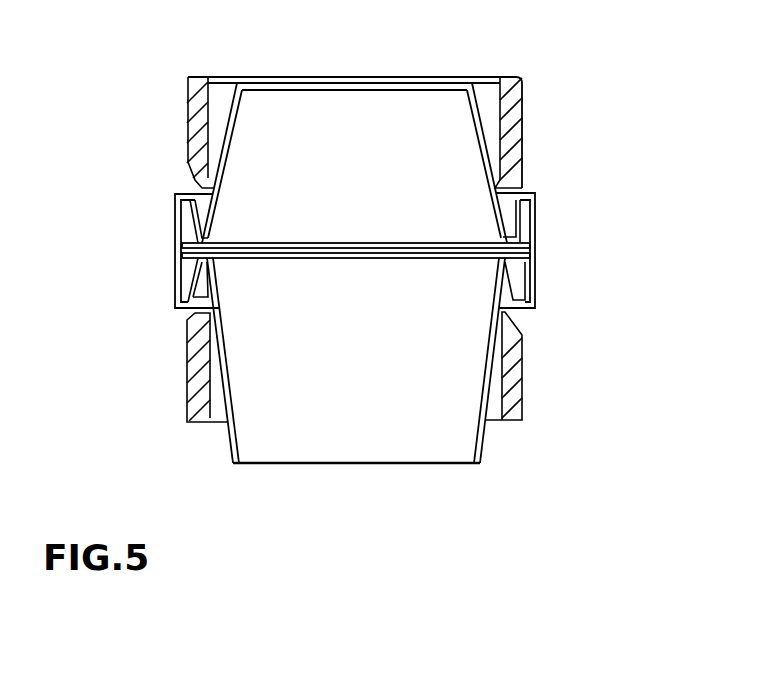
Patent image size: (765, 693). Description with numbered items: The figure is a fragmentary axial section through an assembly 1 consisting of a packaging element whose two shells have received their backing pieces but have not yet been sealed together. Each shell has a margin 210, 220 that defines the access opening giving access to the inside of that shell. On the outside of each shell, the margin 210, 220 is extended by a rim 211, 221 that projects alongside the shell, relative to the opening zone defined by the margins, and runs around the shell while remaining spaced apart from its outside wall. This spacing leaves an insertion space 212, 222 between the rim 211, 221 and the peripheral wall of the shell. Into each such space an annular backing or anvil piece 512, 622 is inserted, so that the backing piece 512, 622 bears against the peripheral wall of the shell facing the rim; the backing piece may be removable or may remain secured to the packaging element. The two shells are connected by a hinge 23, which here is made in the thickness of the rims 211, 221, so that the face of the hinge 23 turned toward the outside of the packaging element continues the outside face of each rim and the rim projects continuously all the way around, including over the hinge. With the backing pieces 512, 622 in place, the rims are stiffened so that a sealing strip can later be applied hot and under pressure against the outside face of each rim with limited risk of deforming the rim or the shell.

The cup assembly 1 is at (557, 68).
The backing piece 512 is at (514, 77).
The insertion space 212 is at (524, 200).
The rim 211 is at (537, 225).
The margin 210 is at (333, 243).
The margin 220 is at (393, 258).
The rim 221 is at (535, 277).
The insertion space 222 is at (202, 297).
The hinge 23 is at (175, 246).
The backing piece 622 is at (192, 377).